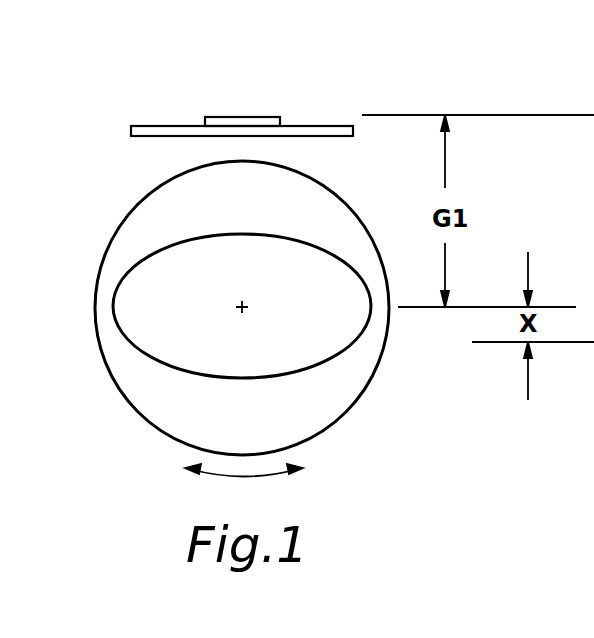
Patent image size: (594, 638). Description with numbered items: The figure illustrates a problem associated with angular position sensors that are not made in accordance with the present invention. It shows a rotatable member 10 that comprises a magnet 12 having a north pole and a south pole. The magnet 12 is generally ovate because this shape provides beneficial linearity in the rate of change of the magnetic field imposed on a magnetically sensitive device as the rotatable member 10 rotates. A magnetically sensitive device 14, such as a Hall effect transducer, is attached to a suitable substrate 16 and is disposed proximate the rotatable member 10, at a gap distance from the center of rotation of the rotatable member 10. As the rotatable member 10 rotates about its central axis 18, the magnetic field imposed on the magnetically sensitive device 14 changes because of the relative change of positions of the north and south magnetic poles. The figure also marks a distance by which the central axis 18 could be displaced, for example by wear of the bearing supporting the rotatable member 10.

The rotatable member 10 is at (352, 378).
The magnet 12 is at (130, 330).
The magnetically sensitive device 14 is at (268, 116).
The substrate 16 is at (142, 125).
The central axis 18 is at (238, 309).